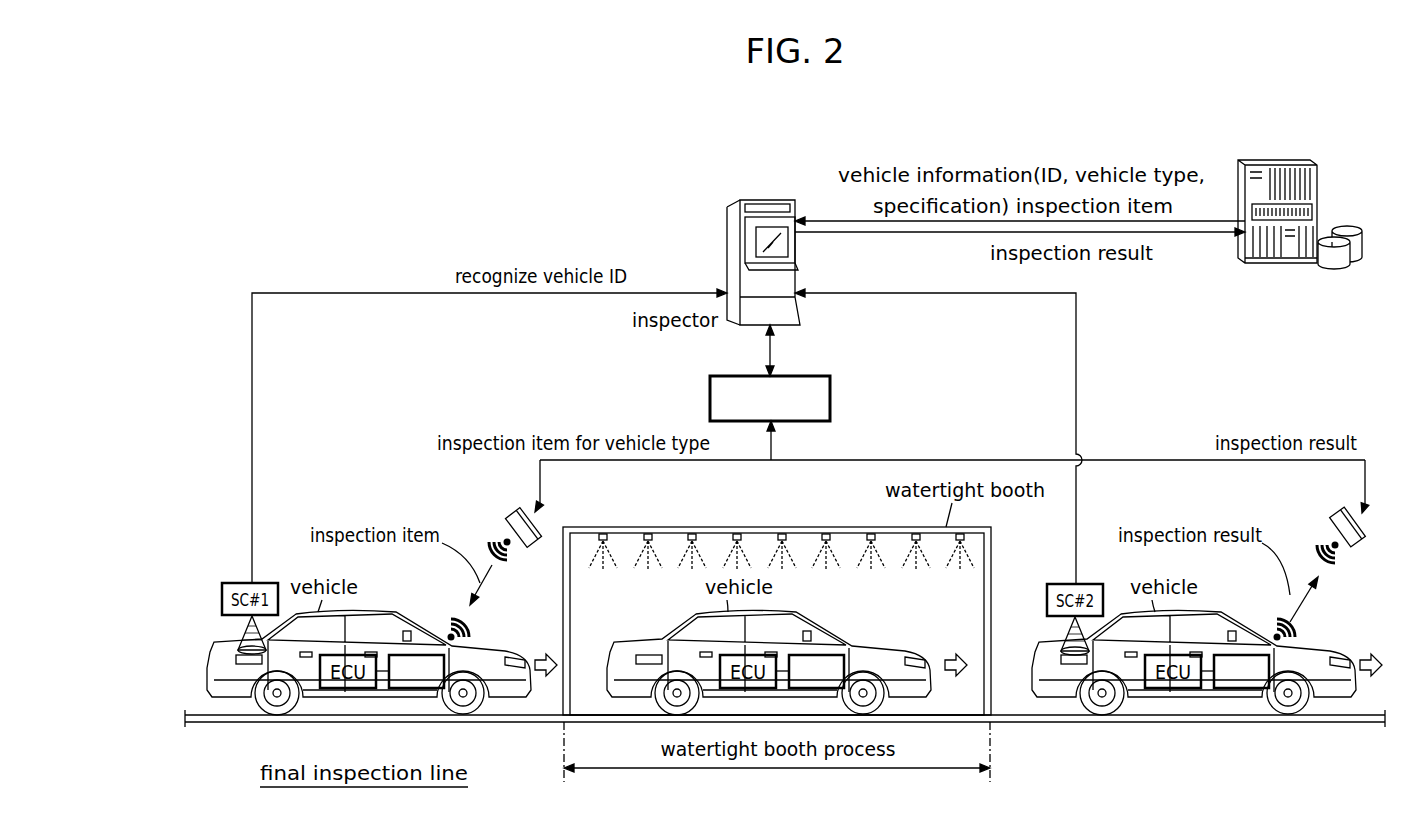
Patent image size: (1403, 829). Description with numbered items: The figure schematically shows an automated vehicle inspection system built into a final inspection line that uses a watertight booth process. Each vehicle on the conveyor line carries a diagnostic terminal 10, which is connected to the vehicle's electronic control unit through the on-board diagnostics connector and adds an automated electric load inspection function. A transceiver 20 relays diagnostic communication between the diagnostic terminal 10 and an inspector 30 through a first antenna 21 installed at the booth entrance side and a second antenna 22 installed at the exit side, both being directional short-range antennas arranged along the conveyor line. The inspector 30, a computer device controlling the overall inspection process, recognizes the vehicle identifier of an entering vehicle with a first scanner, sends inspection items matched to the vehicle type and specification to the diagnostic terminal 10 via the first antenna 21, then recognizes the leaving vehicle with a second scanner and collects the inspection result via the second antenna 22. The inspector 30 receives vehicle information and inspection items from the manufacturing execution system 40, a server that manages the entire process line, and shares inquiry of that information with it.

The diagnostic terminal 10 is at (405, 683).
The transceiver 20 is at (833, 402).
The first antenna 21 is at (512, 512).
The second antenna 22 is at (1336, 512).
The inspector 30 is at (775, 200).
The manufacturing execution system (MES) 40 is at (1278, 160).